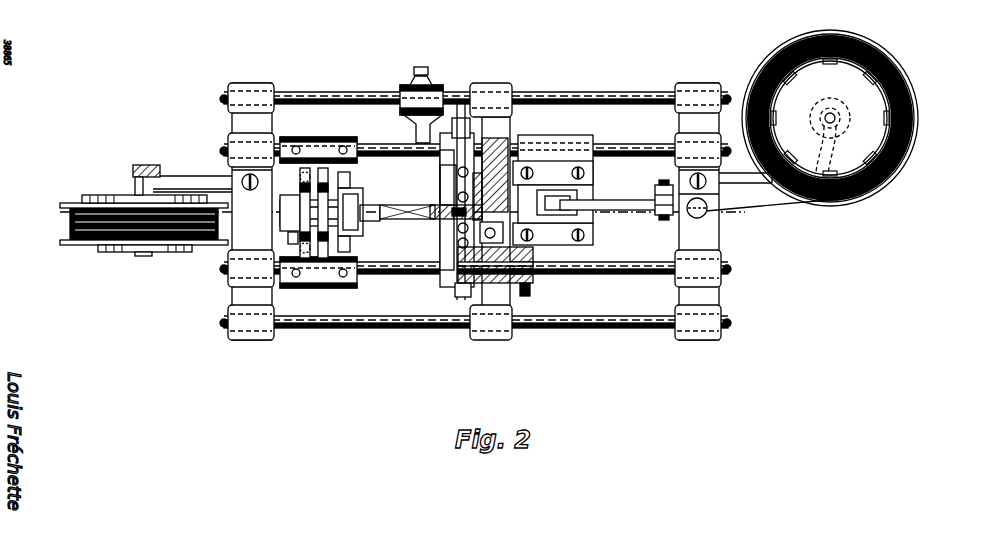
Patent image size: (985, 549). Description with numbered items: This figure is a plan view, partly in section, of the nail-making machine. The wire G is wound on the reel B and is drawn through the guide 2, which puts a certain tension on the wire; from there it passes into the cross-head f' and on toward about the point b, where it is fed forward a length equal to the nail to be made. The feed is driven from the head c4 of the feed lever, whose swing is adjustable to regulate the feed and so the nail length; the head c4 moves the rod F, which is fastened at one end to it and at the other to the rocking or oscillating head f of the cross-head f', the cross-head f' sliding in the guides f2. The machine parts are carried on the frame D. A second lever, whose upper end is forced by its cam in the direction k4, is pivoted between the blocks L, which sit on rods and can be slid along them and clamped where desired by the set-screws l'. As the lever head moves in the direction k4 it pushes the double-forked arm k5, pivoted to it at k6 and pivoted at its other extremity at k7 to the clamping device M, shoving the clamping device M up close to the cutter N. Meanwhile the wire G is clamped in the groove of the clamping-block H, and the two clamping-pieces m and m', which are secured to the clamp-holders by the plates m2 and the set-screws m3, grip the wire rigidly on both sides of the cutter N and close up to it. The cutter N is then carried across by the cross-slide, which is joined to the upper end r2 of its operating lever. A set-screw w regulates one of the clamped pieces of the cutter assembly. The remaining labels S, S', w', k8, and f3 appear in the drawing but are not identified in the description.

The frame D is at (700, 240).
The guide 2 is at (708, 215).
The wire G is at (770, 205).
The reel B is at (900, 163).
The gear wheel S is at (145, 220).
The blocks L is at (323, 140).
The set-screws l' is at (340, 213).
The shaft w' is at (270, 240).
The set-screw w is at (306, 213).
The direction k4 is at (350, 182).
The double-forked arm k5 is at (358, 200).
The pivot k6 is at (350, 244).
The pivot k7 is at (392, 225).
The clutch pin k8 is at (290, 243).
The shaft S' is at (398, 283).
The clamping device M is at (465, 250).
The clamping-piece m is at (437, 216).
The point b is at (431, 229).
The clamping-piece m' is at (437, 206).
The plates m2 is at (447, 183).
The set-screws m3 is at (458, 160).
The cutter N is at (455, 125).
The clamping-block H is at (532, 270).
The upper end of lever r2 is at (527, 289).
The rocking or oscillating head f is at (555, 158).
The cross-head f' is at (575, 155).
The guides f2 is at (595, 238).
The slide way f3 is at (560, 250).
The rod F is at (596, 208).
The head of lever c4 is at (660, 192).